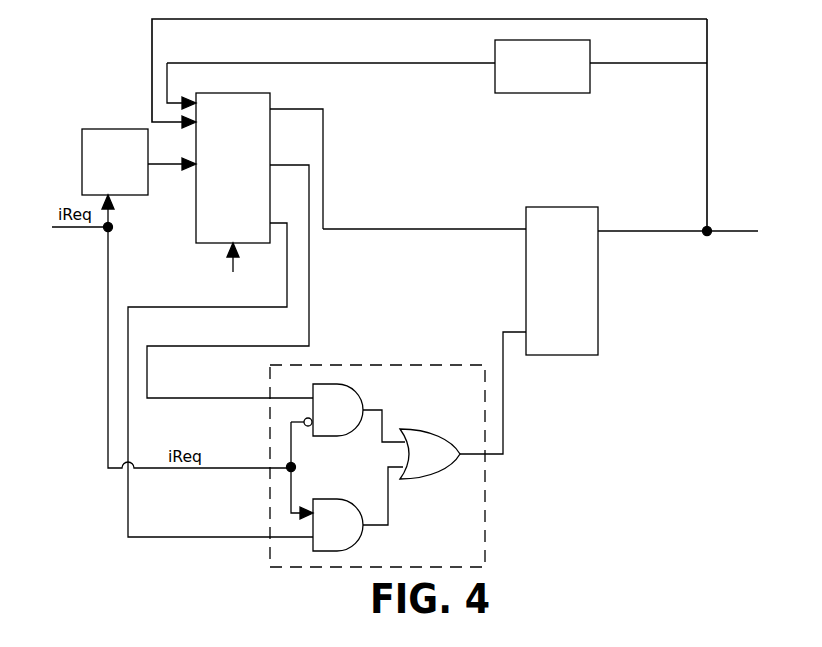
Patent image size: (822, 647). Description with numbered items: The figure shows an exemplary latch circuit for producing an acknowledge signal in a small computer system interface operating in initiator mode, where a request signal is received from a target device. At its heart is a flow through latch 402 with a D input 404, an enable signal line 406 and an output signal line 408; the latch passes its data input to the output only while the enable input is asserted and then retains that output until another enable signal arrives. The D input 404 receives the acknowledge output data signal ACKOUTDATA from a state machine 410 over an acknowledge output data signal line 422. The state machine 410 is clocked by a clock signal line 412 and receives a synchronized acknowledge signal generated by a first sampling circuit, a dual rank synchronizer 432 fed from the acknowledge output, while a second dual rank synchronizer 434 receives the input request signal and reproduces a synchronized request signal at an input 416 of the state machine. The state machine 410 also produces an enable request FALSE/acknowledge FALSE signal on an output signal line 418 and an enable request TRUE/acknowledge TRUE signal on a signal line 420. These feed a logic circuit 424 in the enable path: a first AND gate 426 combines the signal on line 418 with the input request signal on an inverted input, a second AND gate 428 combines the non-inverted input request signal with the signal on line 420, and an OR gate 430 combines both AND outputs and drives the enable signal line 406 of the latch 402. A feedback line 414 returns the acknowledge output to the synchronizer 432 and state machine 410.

The flow through latch 402 is at (568, 356).
The D input 404 is at (433, 230).
The enable signal line 406 is at (513, 331).
The output signal line 408 is at (718, 233).
The state machine 410 is at (270, 100).
The clock signal line 412 is at (233, 264).
The os Ack feedback signal line 414 is at (395, 64).
The input 416 is at (153, 167).
The output signal line 418 is at (310, 300).
The output enable request TRUE/acknowledge TRUE signal line 420 is at (128, 512).
The acknowledge output data signal line 422 is at (270, 112).
The logic circuit 424 is at (487, 527).
The first AND gate 426 is at (355, 393).
The second AND gate 428 is at (358, 530).
The OR gate 430 is at (449, 468).
The dual rank synchronizer 432 is at (530, 94).
The dual rank synchronizer 434 is at (125, 128).